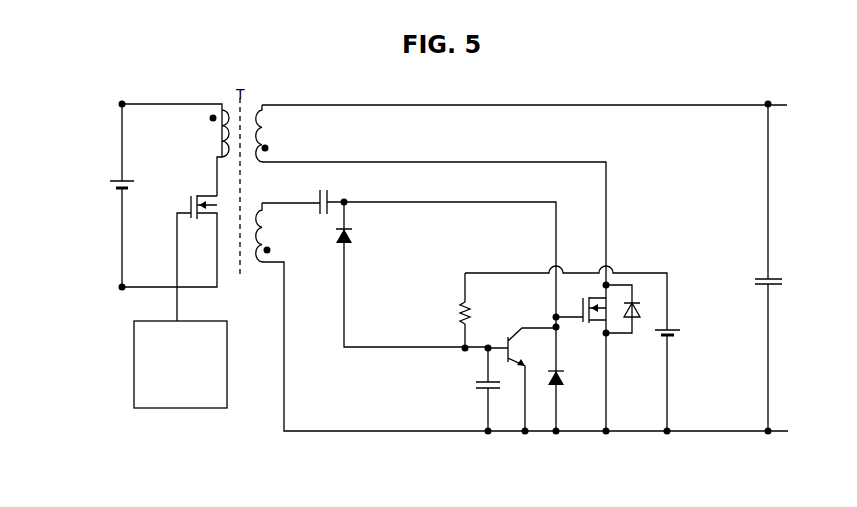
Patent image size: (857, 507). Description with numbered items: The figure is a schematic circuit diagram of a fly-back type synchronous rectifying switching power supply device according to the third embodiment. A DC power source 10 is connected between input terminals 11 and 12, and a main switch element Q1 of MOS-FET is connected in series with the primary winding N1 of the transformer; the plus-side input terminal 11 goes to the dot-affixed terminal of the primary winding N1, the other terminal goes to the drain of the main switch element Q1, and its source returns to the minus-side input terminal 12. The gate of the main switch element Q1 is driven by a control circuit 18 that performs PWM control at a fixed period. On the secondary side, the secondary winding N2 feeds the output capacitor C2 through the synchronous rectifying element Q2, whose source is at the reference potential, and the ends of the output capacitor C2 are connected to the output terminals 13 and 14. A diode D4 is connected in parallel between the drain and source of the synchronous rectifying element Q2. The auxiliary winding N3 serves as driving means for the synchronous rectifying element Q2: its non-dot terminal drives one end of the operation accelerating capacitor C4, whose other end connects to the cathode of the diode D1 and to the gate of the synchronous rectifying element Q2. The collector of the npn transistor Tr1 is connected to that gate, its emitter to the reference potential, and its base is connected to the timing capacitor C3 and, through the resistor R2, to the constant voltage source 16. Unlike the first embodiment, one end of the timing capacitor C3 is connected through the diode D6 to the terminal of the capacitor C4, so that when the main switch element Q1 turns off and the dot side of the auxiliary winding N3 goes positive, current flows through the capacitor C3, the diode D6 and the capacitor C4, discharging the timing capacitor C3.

The DC power source 10 is at (126, 180).
The input terminal 11 is at (122, 106).
The input terminal 12 is at (122, 287).
The output terminal 13 is at (770, 107).
The output terminal 14 is at (770, 428).
The constant voltage source 16 is at (662, 327).
The control circuit 18 is at (200, 321).
The main switch element Q1 is at (169, 258).
The synchronous rectifying element Q2 is at (581, 320).
The primary winding N1 is at (207, 130).
The secondary winding N2 is at (273, 133).
The auxiliary winding N3 is at (272, 232).
The output capacitor C2 is at (762, 267).
The timing capacitor C3 is at (480, 389).
The operation accelerating capacitor C4 is at (303, 200).
The diode D1 is at (568, 381).
The diode D4 is at (631, 309).
The diode D6 is at (412, 274).
The resistor R2 is at (453, 310).
The transistor Tr1 is at (522, 374).